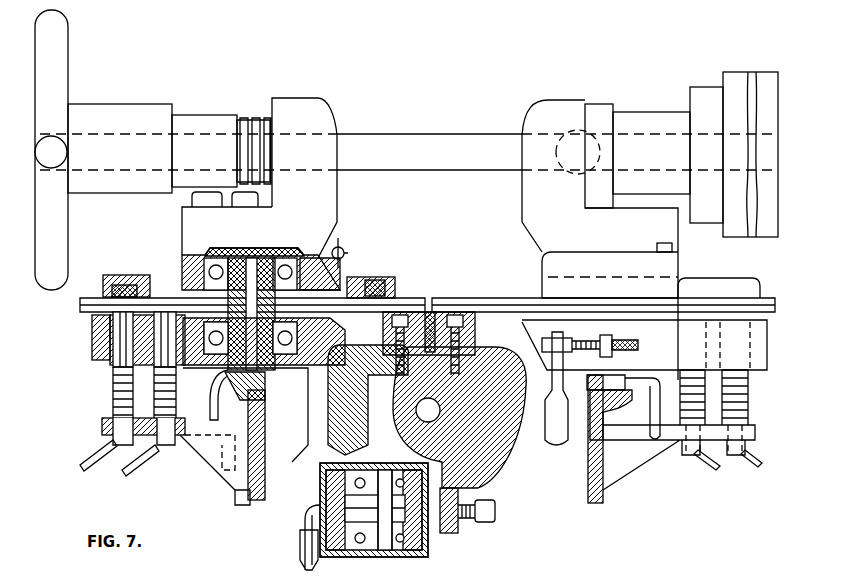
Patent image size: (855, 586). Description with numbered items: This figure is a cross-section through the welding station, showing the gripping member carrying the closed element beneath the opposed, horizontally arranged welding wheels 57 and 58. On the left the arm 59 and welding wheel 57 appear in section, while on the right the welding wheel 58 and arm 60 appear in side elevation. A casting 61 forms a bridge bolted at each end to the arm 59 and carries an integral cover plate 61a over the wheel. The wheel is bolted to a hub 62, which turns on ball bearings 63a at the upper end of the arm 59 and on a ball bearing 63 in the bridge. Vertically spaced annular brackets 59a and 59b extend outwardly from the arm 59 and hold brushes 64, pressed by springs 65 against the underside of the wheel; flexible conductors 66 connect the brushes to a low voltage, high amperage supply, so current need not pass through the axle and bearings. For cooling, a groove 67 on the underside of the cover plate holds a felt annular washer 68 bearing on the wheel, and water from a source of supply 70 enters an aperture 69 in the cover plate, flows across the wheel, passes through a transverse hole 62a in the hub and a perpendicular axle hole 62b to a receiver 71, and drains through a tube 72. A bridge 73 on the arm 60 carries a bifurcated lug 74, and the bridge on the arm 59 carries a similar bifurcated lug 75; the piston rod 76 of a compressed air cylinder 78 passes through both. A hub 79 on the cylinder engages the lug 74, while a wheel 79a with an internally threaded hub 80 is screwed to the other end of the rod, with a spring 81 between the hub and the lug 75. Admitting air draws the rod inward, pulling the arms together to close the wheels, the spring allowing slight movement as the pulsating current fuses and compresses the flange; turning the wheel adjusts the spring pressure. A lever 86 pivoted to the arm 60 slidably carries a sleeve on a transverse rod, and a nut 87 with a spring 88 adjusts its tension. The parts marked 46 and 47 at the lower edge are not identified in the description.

The wheel 79a is at (62, 65).
The internally threaded hub 80 is at (196, 116).
The spring 81 is at (250, 118).
The bifurcated lug 75 is at (333, 118).
The piston rod 76 is at (408, 143).
The bifurcated lug 74 is at (558, 112).
The hub 79 is at (608, 108).
The compressed air cylinder 78 is at (745, 72).
The bridge 73 is at (542, 266).
The source of supply 70 is at (340, 240).
The aperture 69 is at (346, 284).
The cover plate 61a is at (372, 280).
The welding wheel 57 is at (408, 298).
The welding wheel 58 is at (450, 298).
The nut 87 is at (606, 338).
The spring 88 is at (638, 344).
The annular washer 68 is at (108, 282).
The groove 67 is at (124, 285).
The casting 61 is at (184, 266).
The transverse hole 62a is at (262, 256).
The ball bearing 63 is at (306, 258).
The annular bracket 59a is at (92, 336).
The arm 59 is at (92, 350).
The brushes 64 is at (160, 340).
The springs 65 is at (156, 395).
The annular bracket 59b is at (102, 428).
The flexible conductors 66 is at (125, 468).
The axle hole 62b is at (224, 372).
The tube 72 is at (210, 405).
The hub 62 is at (272, 370).
The receiver 71 is at (266, 395).
The ball bearings 63a is at (320, 335).
The lever 86 is at (556, 422).
The arm 60 is at (570, 468).
The gear housing 46 is at (319, 524).
The bolt 47 is at (511, 543).